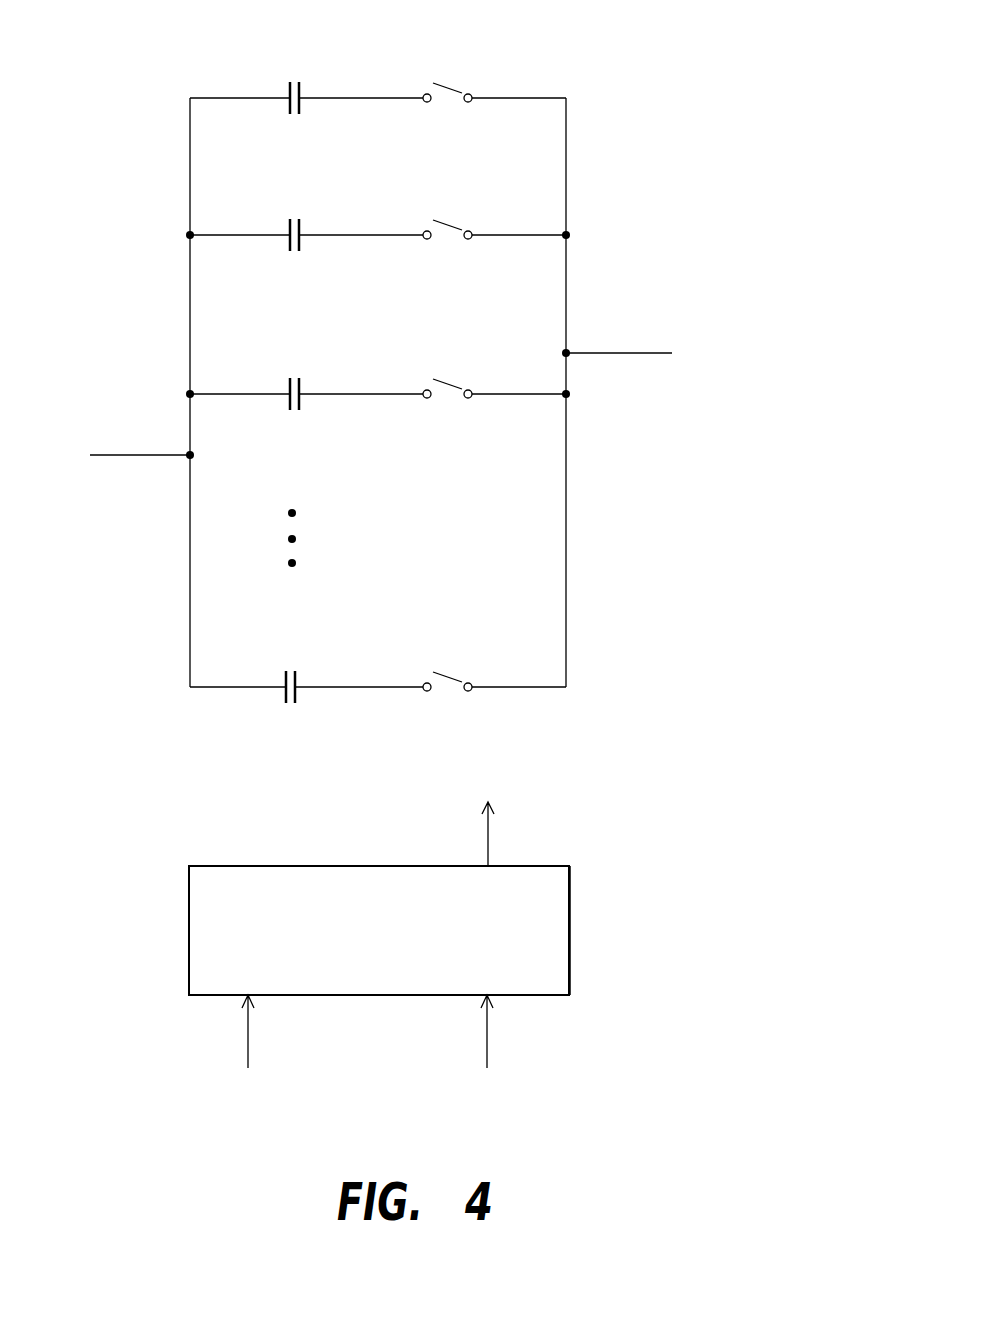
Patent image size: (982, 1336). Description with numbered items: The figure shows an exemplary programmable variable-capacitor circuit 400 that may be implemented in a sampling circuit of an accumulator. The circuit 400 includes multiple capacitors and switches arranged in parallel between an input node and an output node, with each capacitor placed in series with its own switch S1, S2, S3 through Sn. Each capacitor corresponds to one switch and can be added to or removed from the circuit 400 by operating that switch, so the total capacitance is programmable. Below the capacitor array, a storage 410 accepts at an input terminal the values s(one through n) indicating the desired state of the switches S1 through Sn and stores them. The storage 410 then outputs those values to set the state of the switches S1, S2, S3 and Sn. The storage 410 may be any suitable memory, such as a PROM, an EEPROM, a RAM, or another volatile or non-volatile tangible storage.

The programmable variable-capacitor circuit 400 is at (398, 386).
The storage 410 is at (568, 866).
The switch S1 is at (378, 73).
The switch S2 is at (378, 217).
The switch S3 is at (378, 372).
The switch Sn is at (378, 664).